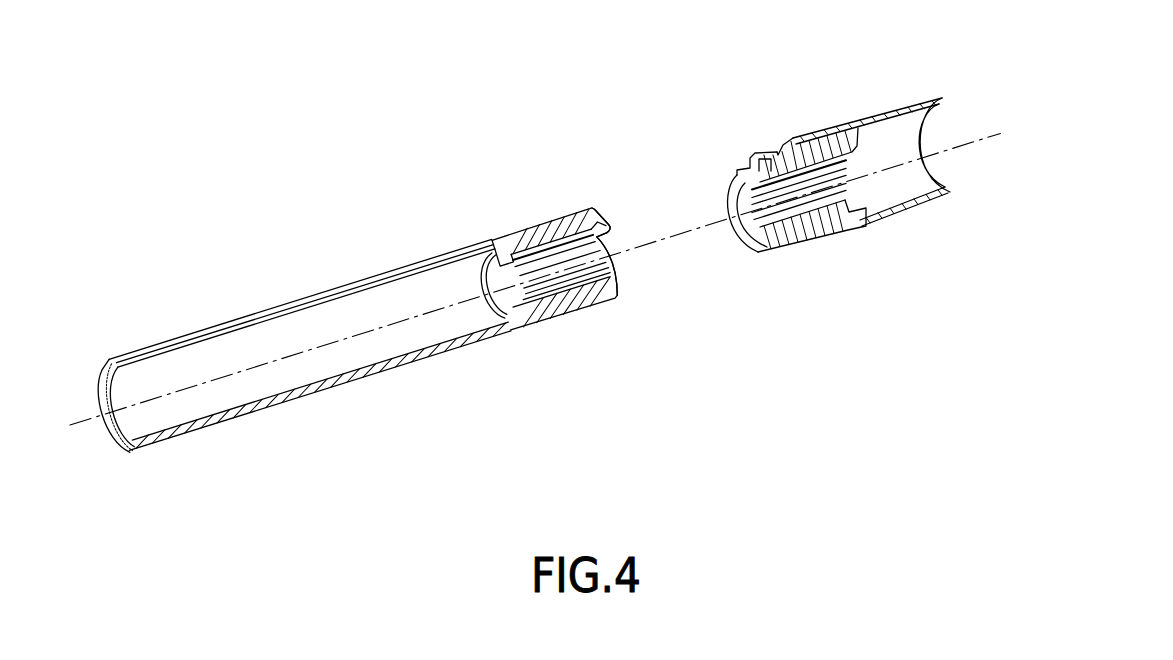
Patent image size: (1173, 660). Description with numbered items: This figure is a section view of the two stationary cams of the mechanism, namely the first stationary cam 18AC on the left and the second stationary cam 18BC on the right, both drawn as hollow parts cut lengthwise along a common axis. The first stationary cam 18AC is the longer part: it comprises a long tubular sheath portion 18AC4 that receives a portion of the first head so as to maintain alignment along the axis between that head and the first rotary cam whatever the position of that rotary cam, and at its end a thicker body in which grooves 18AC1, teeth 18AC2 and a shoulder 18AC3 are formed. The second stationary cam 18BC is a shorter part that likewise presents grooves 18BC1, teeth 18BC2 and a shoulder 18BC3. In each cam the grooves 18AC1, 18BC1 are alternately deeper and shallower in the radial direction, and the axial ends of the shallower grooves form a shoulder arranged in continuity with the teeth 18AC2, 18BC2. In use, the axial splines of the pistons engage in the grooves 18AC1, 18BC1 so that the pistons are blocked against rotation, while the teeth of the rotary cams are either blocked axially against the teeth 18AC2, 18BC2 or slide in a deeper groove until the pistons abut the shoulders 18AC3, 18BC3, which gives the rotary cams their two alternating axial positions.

The first stationary cam 18AC is at (523, 217).
The grooves 18AC1 is at (601, 266).
The teeth 18AC2 is at (500, 270).
The shoulder 18AC3 is at (577, 232).
The sheath portion 18AC4 is at (284, 306).
The second stationary cam 18BC is at (813, 114).
The grooves 18BC1 is at (737, 180).
The teeth 18BC2 is at (833, 181).
The shoulder 18BC3 is at (782, 229).